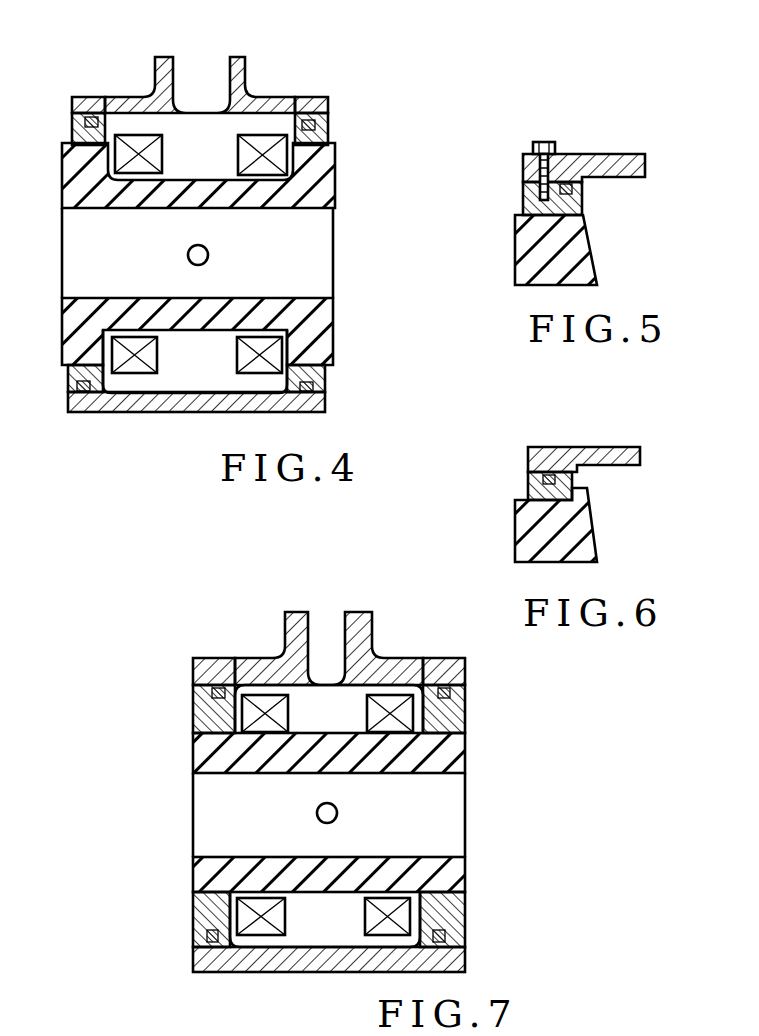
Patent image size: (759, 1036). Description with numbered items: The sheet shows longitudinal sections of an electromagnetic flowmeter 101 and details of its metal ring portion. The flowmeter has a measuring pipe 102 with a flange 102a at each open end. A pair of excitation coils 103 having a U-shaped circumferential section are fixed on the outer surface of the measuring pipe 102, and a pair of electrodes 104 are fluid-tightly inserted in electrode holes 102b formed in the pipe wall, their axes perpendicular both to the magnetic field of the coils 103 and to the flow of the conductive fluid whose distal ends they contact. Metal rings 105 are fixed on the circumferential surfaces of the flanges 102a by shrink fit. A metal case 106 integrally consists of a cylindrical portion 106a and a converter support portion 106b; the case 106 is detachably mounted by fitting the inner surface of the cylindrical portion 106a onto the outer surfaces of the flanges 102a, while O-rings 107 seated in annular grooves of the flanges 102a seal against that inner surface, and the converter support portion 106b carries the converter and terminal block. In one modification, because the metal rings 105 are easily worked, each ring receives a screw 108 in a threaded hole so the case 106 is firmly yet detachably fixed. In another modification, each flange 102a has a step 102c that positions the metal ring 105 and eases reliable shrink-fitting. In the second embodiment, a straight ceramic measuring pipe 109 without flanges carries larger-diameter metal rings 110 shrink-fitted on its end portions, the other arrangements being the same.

In FIG. 4, the electromagnetic flowmeter 101 is at (336, 82).
In FIG. 7, the electromagnetic flowmeter 101 is at (429, 636).
In FIG. 4, the measuring pipe 102 is at (346, 183).
In FIG. 5, the measuring pipe 102 is at (512, 259).
In FIG. 6, the measuring pipe 102 is at (512, 533).
In FIG. 4, the flange 102a is at (80, 138).
In FIG. 5, the flange 102a is at (591, 249).
In FIG. 6, the flange 102a is at (592, 526).
In FIG. 4, the electrode hole 102b is at (190, 253).
In FIG. 7, the electrode hole 102b is at (317, 813).
In FIG. 6, the step 102c is at (587, 493).
In FIG. 4, the excitation coil 103 is at (276, 134).
In FIG. 7, the excitation coil 103 is at (405, 699).
In FIG. 4, the electrode 104 is at (208, 252).
In FIG. 7, the electrode 104 is at (337, 812).
In FIG. 4, the metal ring 105 is at (74, 116).
In FIG. 5, the metal ring 105 is at (522, 190).
In FIG. 6, the metal ring 105 is at (527, 477).
In FIG. 4, the metal case 106 is at (138, 70).
In FIG. 5, the metal case 106 is at (591, 150).
In FIG. 6, the metal case 106 is at (536, 440).
In FIG. 7, the metal case 106 is at (278, 630).
In FIG. 4, the cylindrical portion 106a is at (108, 97).
In FIG. 5, the cylindrical portion 106a is at (639, 153).
In FIG. 6, the cylindrical portion 106a is at (615, 446).
In FIG. 7, the cylindrical portion 106a is at (222, 665).
In FIG. 4, the converter support portion 106b is at (246, 66).
In FIG. 7, the converter support portion 106b is at (377, 622).
In FIG. 4, the O-ring 107 is at (309, 119).
In FIG. 5, the O-ring 107 is at (574, 192).
In FIG. 6, the O-ring 107 is at (543, 480).
In FIG. 7, the O-ring 107 is at (443, 691).
In FIG. 5, the screw 108 is at (539, 143).
In FIG. 7, the ceramic measuring pipe 109 is at (465, 757).
In FIG. 7, the metal ring 110 is at (465, 712).